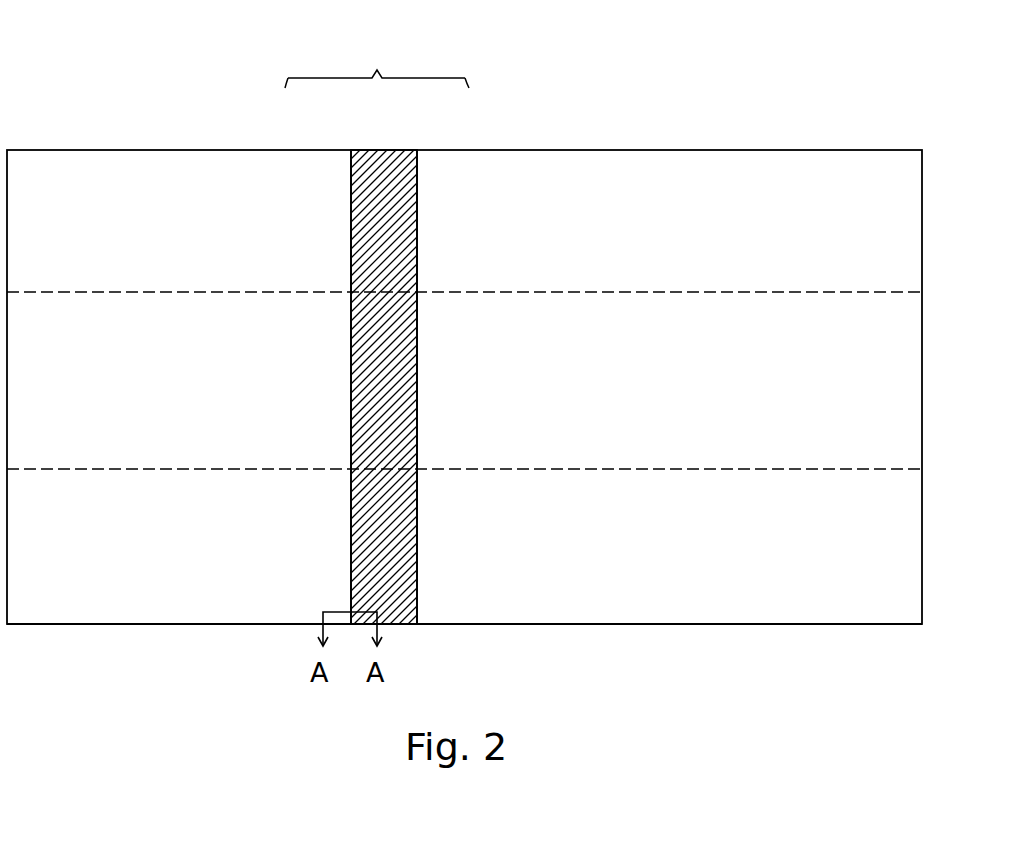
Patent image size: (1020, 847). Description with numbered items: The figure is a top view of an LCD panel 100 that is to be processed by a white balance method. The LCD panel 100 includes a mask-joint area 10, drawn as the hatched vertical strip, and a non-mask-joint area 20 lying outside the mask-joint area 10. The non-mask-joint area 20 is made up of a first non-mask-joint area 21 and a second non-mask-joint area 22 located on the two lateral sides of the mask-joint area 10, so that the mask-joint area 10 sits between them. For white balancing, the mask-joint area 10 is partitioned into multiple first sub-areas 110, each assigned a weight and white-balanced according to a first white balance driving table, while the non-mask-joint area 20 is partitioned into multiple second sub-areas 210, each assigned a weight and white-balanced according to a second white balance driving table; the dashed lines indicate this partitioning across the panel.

The LCD panel 100 is at (782, 103).
The second sub-area 210 is at (135, 220).
The first sub-area 110 is at (402, 198).
The mask-joint area 10 is at (405, 624).
The non-mask-joint area 20 is at (377, 61).
The first non-mask-joint area 21 is at (277, 148).
The second non-mask-joint area 22 is at (482, 148).